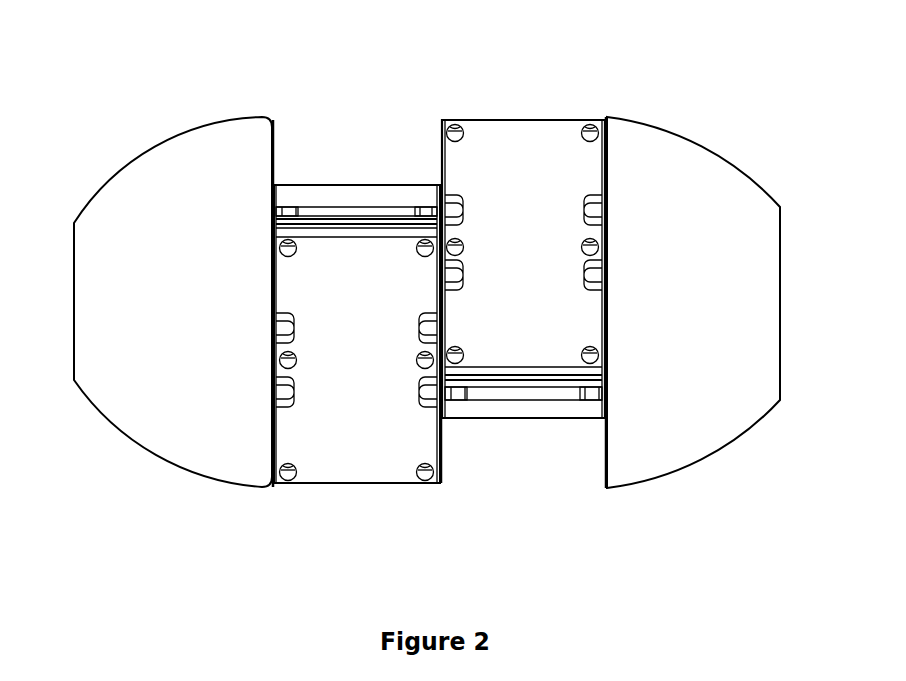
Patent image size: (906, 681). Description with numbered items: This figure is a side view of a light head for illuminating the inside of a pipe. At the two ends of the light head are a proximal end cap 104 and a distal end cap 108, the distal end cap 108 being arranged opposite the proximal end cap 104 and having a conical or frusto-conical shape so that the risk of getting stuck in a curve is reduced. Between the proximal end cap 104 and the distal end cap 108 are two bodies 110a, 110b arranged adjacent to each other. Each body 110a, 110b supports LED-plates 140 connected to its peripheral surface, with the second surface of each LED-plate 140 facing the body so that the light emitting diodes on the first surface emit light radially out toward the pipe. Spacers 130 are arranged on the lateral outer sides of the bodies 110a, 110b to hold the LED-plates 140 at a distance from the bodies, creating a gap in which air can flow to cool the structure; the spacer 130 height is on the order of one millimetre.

The proximal end cap 104 is at (673, 137).
The distal end cap 108 is at (128, 432).
The body 110a is at (310, 220).
The body 110b is at (542, 380).
The spacer 130 is at (292, 207).
The LED-plate 140 is at (343, 197).